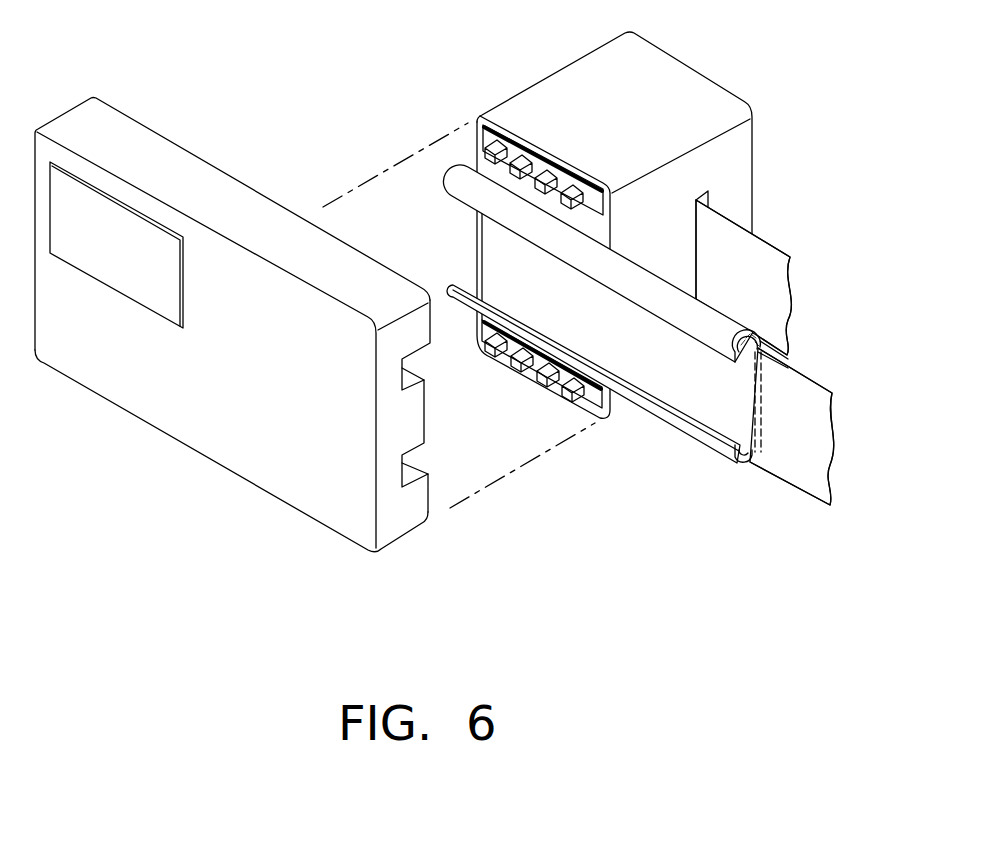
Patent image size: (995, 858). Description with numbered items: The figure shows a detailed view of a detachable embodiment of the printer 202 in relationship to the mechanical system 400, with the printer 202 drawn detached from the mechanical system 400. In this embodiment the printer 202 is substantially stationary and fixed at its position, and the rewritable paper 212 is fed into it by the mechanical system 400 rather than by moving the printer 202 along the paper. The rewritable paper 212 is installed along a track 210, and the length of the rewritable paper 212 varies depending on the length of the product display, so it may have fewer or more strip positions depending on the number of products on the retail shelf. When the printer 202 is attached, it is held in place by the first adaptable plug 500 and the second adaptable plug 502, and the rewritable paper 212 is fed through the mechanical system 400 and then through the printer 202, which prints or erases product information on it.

The printer 202 is at (232, 403).
The mechanical system 400 is at (655, 70).
The first adaptable plug 500 is at (480, 136).
The second adaptable plug 502 is at (590, 400).
The track 210 is at (722, 449).
The rewritable paper 212 is at (768, 255).